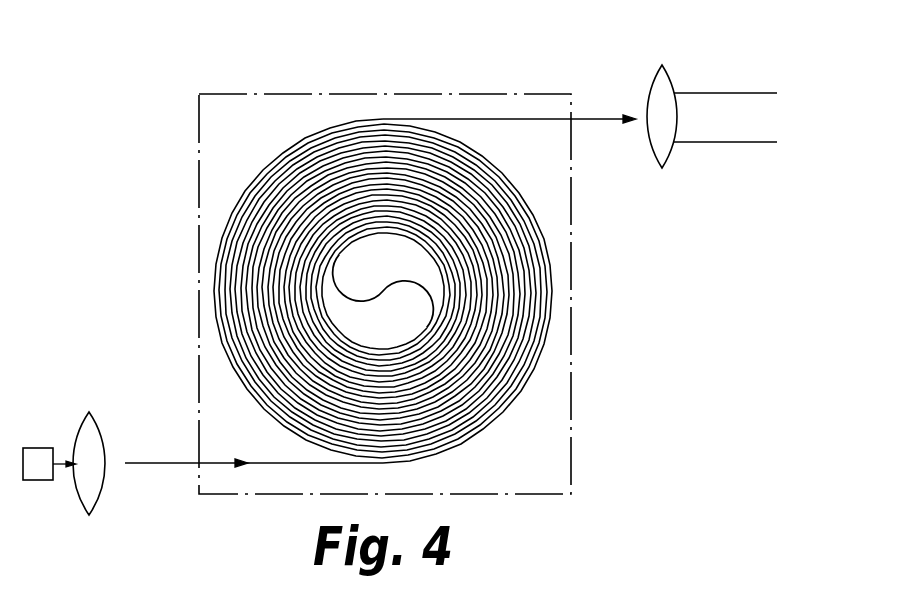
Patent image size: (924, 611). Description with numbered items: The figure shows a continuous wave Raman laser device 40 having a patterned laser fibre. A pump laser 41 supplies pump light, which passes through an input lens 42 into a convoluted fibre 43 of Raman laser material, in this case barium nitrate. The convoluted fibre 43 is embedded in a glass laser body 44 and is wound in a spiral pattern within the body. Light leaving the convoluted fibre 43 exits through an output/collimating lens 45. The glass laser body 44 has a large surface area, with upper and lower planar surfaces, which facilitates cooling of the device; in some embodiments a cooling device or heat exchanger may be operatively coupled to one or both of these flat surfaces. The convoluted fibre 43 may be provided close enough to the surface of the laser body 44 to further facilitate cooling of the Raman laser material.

The continuous wave Raman laser device 40 is at (410, 294).
The pump laser 41 is at (37, 448).
The input lens 42 is at (87, 440).
The convoluted fibre 43 is at (216, 243).
The glass laser body 44 is at (571, 237).
The output/collimating lens 45 is at (656, 92).